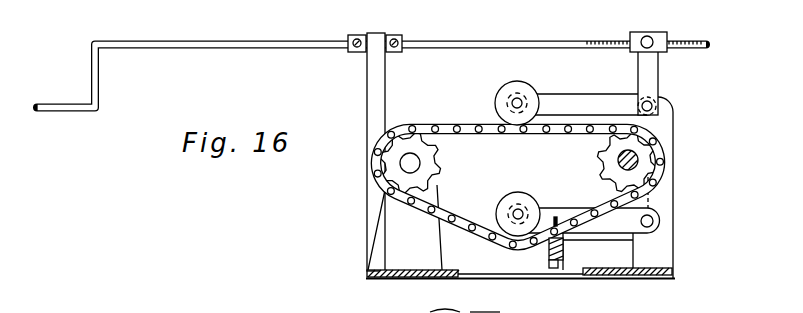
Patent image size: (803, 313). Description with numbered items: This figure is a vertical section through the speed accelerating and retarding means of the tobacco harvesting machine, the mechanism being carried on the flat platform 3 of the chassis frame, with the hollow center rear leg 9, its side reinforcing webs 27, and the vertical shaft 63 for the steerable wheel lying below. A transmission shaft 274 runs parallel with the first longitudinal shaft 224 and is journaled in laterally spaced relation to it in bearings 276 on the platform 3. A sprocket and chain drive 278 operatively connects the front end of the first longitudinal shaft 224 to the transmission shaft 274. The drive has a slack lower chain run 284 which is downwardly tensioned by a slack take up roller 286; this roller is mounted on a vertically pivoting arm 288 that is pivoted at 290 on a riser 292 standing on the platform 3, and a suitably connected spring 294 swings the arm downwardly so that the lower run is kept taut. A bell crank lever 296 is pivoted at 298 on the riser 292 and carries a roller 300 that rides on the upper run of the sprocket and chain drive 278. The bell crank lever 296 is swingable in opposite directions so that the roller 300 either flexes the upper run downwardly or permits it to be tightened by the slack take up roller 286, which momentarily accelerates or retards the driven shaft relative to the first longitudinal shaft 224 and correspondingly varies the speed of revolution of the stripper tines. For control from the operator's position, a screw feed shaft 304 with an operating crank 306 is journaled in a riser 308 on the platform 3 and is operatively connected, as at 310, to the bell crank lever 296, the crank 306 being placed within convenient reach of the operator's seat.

The platform 3 is at (658, 278).
The center rear leg 9 is at (369, 281).
The side reinforcing webs 27 is at (485, 312).
The vertical shaft 63 is at (405, 312).
The first longitudinal shaft 224 is at (638, 160).
The transmission shaft 274 is at (404, 163).
The bearings 276 is at (403, 237).
The sprocket and chain drive 278 is at (436, 126).
The slack lower chain run 284 is at (467, 210).
The slack take up roller 286 is at (528, 194).
The vertically pivoting arm 288 is at (607, 228).
The pivot 290 is at (653, 221).
The riser 292 is at (673, 250).
The spring 294 is at (557, 266).
The bell crank lever 296 is at (590, 94).
The pivot 298 is at (652, 101).
The roller 300 is at (506, 88).
The screw feed shaft 304 is at (152, 41).
The operating crank 306 is at (78, 112).
The riser 308 is at (367, 81).
The operative connection 310 is at (647, 36).